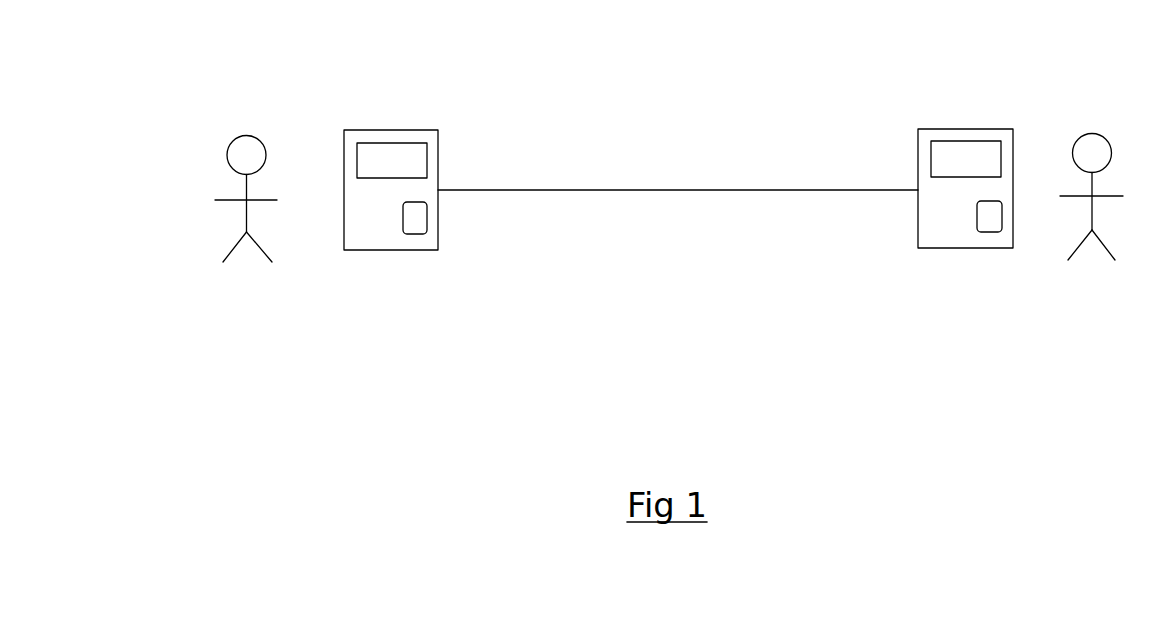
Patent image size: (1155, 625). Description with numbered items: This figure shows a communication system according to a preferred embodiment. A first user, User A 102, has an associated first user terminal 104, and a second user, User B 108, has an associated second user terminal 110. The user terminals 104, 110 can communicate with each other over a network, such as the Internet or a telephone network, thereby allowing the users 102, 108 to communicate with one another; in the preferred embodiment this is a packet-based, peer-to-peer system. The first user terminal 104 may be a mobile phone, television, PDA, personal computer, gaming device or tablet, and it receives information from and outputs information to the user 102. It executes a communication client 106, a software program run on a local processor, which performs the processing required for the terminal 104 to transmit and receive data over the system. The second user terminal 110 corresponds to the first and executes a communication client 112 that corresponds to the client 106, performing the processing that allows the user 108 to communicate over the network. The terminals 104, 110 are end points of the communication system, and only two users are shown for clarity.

The first user 102 is at (247, 133).
The first user terminal 104 is at (352, 130).
The communication client 106 is at (415, 227).
The second user 108 is at (1093, 133).
The second user terminal 110 is at (928, 129).
The communication client 112 is at (990, 225).